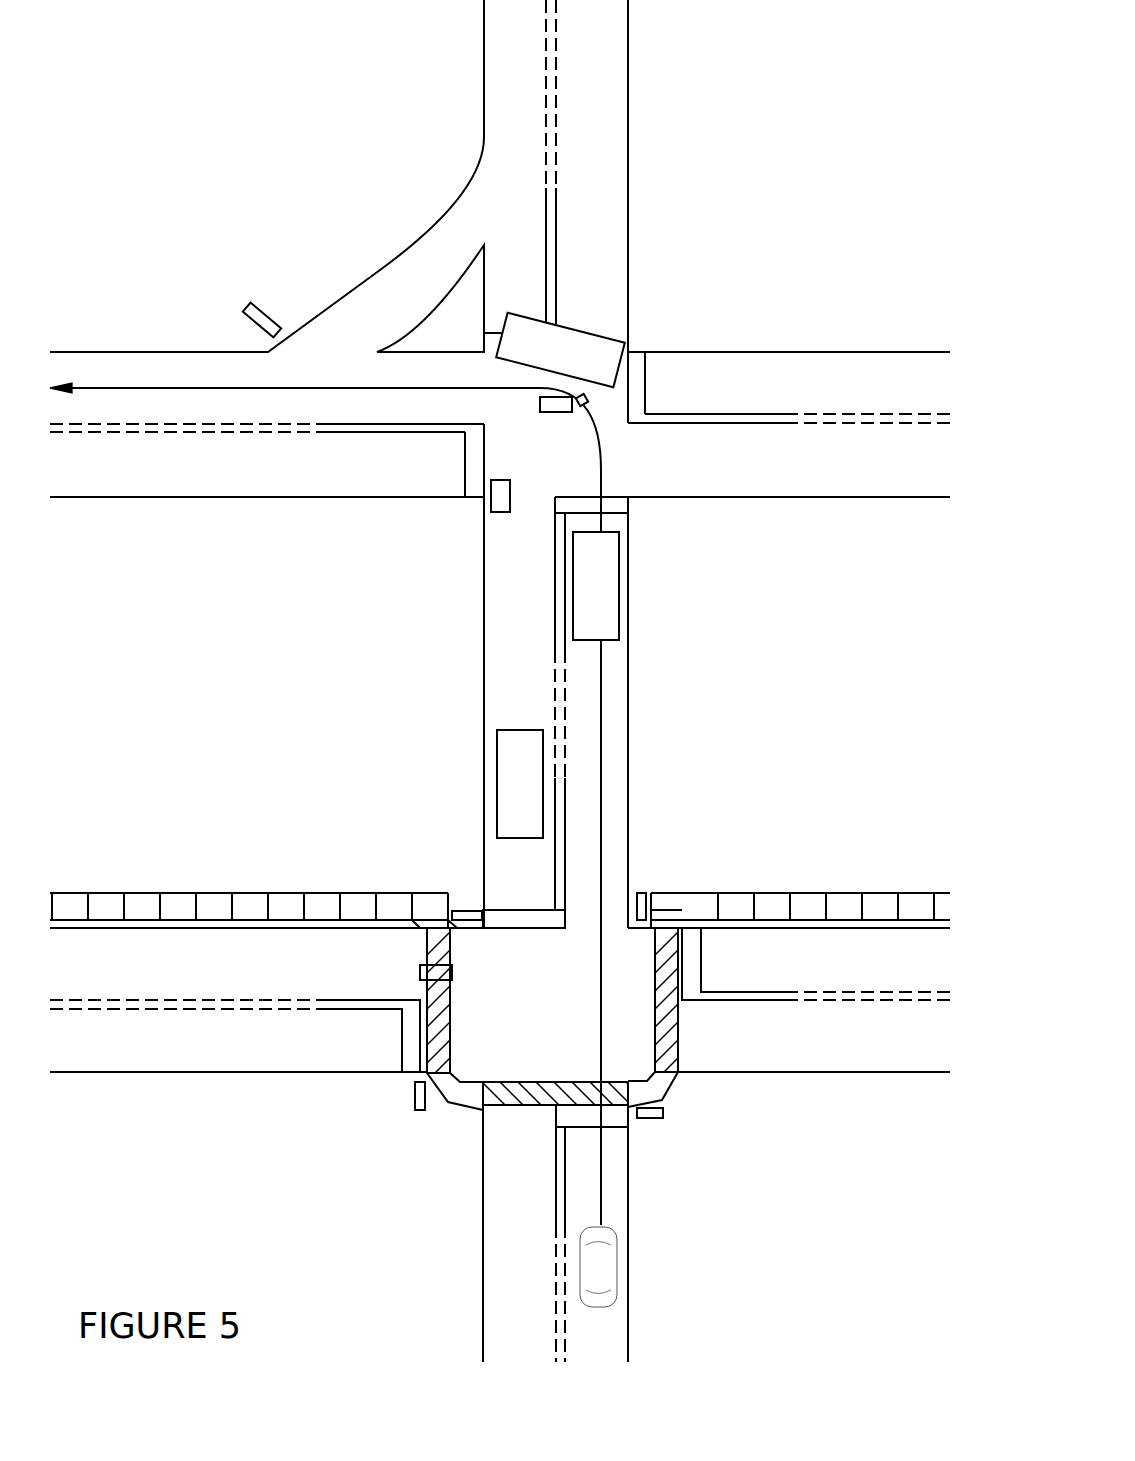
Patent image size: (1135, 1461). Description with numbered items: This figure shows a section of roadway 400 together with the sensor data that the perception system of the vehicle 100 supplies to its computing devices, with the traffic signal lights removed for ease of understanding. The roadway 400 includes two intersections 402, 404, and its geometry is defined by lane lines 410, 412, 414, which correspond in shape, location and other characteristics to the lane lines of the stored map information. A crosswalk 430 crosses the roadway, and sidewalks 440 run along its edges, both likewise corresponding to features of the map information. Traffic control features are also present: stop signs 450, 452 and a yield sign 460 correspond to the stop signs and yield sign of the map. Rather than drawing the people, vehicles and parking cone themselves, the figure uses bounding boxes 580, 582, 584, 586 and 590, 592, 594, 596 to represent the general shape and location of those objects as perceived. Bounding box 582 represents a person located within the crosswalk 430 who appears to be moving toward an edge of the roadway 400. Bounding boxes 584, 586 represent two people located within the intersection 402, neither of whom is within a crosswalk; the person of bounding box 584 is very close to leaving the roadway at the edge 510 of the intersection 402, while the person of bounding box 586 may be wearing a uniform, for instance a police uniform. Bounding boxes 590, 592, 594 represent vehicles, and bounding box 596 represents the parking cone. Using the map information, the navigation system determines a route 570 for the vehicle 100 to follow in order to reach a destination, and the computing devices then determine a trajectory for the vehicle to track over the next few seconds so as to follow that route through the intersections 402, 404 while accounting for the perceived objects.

The vehicle 100 is at (617, 1270).
The roadway 400 is at (500, 681).
The intersection 402 is at (557, 417).
The intersection 404 is at (609, 847).
The lane line 410 is at (137, 1010).
The lane line 412 is at (208, 1072).
The lane line 414 is at (556, 100).
The crosswalk 430 is at (445, 1075).
The sidewalks 440 is at (735, 892).
The stop sign 450 is at (463, 910).
The stop sign 452 is at (663, 1112).
The yield sign 460 is at (247, 316).
The edge of intersection 510 is at (485, 505).
The route 570 is at (357, 388).
The bounding box 580 is at (418, 972).
The bounding box 582 is at (668, 892).
The bounding box 584 is at (495, 513).
The bounding box 586 is at (545, 397).
The bounding box 590 is at (618, 372).
The bounding box 592 is at (619, 607).
The bounding box 594 is at (497, 777).
The bounding box 596 is at (588, 402).